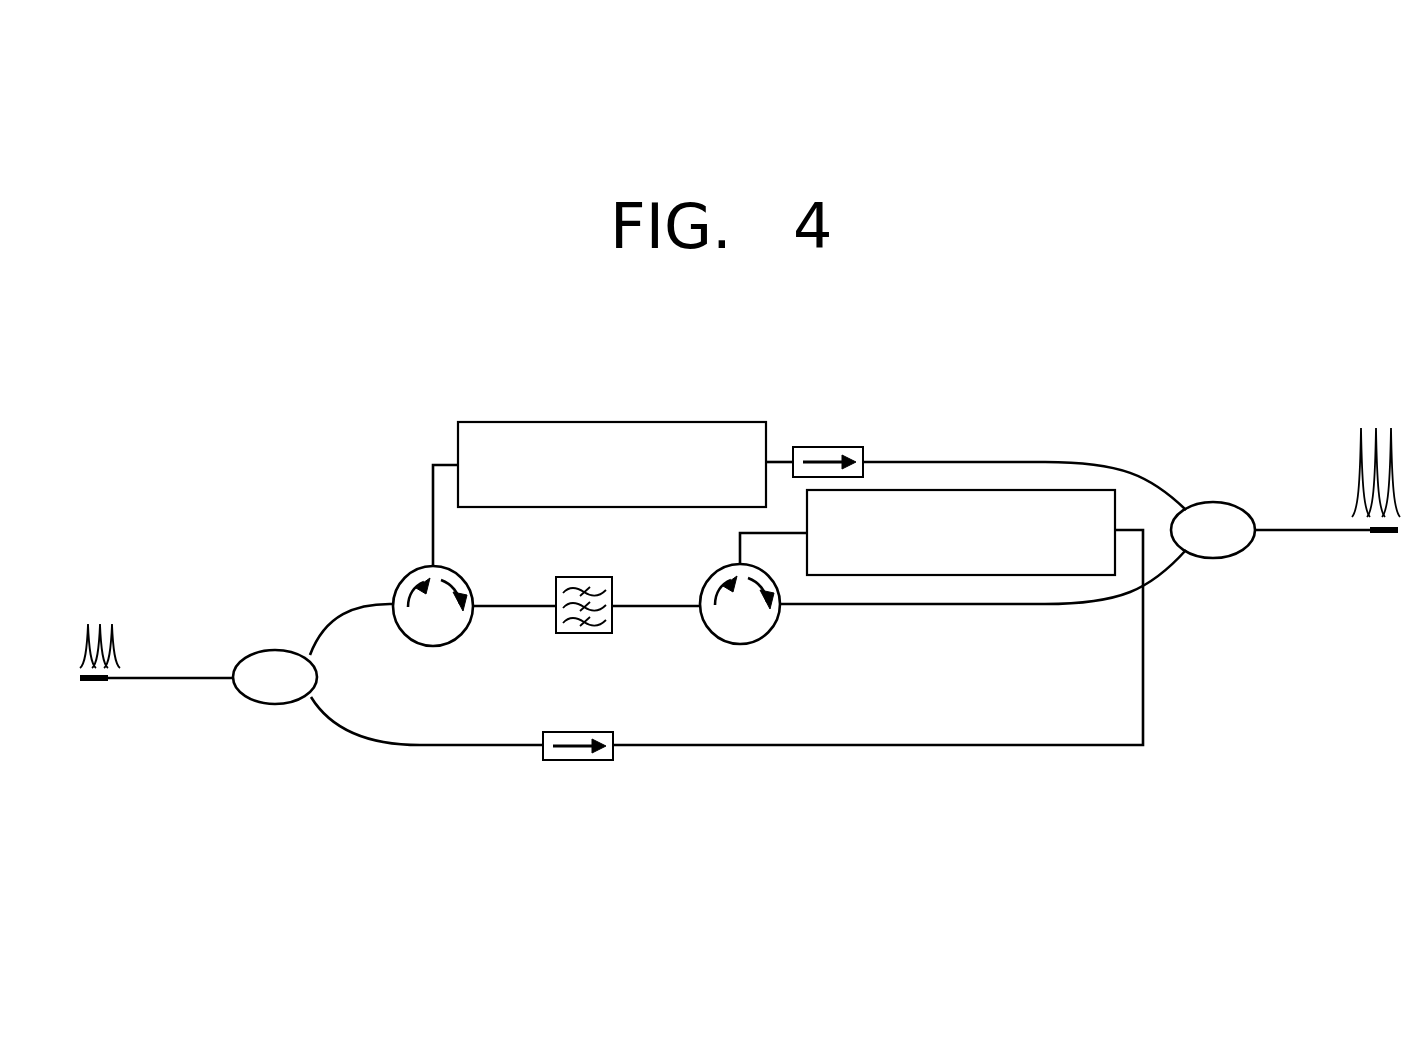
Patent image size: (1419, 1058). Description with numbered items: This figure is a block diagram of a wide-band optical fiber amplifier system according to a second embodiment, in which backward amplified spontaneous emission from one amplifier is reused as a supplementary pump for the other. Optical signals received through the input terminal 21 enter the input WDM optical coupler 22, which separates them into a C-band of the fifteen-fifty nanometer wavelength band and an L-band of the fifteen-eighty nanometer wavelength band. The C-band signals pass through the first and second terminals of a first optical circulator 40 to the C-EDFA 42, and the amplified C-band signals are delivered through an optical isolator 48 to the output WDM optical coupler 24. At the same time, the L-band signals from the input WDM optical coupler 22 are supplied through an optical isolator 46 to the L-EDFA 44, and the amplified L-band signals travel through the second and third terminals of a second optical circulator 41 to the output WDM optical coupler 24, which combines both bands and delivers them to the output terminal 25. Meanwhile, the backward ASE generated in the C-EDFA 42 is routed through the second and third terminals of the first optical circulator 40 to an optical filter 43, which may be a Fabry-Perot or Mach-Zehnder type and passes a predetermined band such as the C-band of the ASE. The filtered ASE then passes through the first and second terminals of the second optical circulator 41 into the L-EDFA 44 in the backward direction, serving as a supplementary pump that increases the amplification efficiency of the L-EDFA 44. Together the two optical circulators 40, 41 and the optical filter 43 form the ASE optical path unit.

The input terminal 21 is at (100, 688).
The input WDM optical coupler 22 is at (254, 652).
The output WDM optical coupler 24 is at (1228, 500).
The output terminal 25 is at (1392, 538).
The first optical circulator 40 is at (406, 576).
The second optical circulator 41 is at (713, 574).
The C-EDFA 42 is at (611, 421).
The optical filter 43 is at (584, 576).
The L-EDFA 44 is at (806, 511).
The optical isolator 46 is at (572, 762).
The optical isolator 48 is at (821, 446).